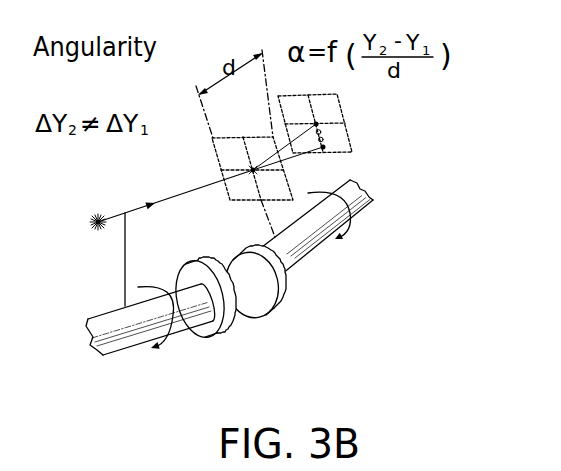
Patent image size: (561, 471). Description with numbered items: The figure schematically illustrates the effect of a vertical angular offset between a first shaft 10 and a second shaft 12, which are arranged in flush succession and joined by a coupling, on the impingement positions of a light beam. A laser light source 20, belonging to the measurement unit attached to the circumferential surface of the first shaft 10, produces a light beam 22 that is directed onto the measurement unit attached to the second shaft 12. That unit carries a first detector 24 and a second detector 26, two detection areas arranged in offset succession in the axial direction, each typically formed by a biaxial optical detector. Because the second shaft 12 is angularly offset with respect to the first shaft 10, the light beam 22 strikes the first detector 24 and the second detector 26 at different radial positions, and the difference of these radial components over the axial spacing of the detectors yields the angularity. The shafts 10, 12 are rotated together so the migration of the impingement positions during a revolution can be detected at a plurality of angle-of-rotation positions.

The first shaft 10 is at (117, 333).
The second shaft 12 is at (298, 237).
The laser light source 20 is at (92, 220).
The light beam 22 is at (207, 190).
The first detector 24 is at (277, 177).
The second detector 26 is at (343, 137).